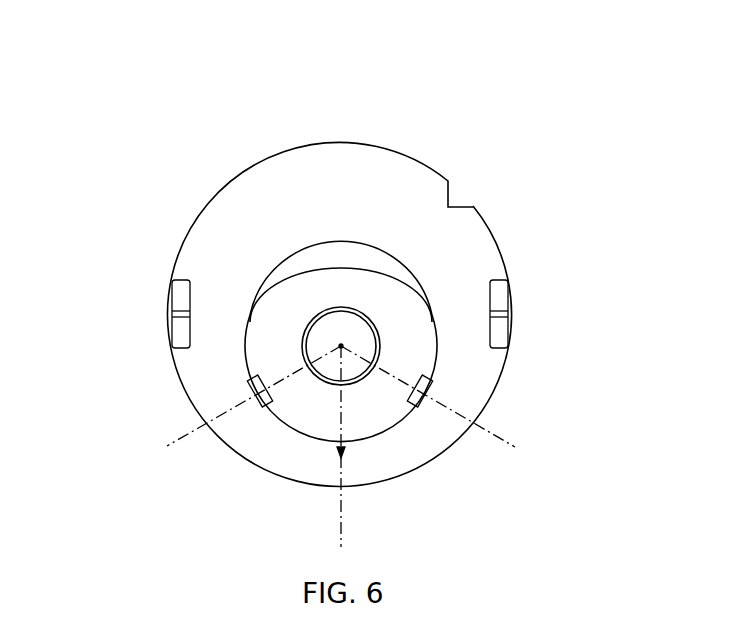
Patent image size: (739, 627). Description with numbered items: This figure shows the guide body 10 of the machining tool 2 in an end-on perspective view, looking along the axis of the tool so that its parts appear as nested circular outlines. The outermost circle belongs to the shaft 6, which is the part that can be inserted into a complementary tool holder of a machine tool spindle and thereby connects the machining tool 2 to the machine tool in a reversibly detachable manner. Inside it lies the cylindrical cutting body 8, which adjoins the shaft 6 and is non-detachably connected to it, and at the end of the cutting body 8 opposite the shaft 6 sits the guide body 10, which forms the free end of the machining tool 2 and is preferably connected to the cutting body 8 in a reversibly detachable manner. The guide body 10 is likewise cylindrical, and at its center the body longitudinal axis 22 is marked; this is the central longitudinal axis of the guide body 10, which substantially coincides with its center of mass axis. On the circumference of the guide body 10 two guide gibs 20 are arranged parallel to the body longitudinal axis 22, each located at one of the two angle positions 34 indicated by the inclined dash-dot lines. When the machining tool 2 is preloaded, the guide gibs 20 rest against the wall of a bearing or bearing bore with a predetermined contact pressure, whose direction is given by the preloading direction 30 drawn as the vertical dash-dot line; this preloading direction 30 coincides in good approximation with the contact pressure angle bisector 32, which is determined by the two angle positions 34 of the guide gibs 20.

The machining tool 2 is at (103, 128).
The shaft 6 is at (368, 143).
The cutting body 8 is at (402, 260).
The guide body 10 is at (420, 297).
The guide gibs 20 is at (254, 378).
The body longitudinal axis 22 is at (338, 343).
The preloading direction 30 is at (347, 423).
The contact pressure angle bisector 32 is at (338, 467).
The angle positions 34 is at (176, 438).